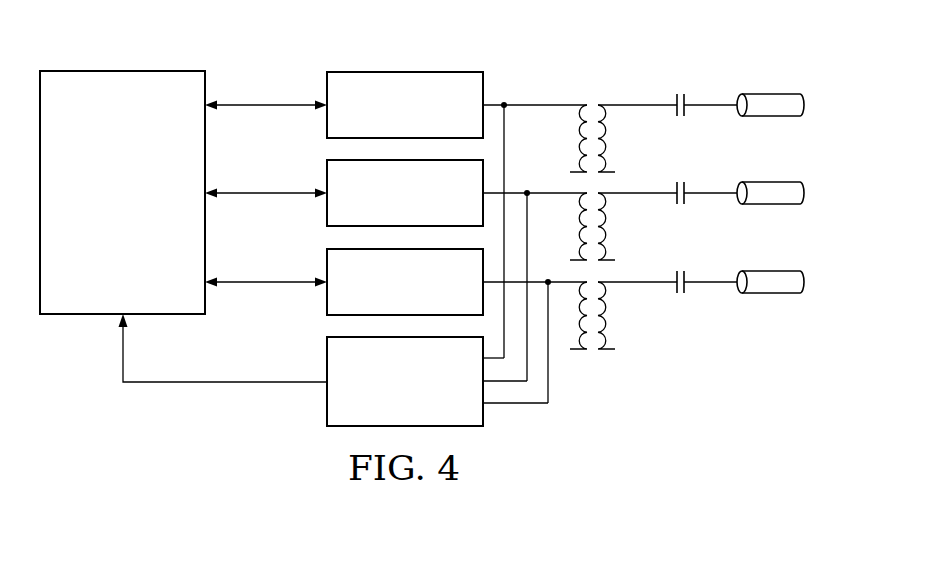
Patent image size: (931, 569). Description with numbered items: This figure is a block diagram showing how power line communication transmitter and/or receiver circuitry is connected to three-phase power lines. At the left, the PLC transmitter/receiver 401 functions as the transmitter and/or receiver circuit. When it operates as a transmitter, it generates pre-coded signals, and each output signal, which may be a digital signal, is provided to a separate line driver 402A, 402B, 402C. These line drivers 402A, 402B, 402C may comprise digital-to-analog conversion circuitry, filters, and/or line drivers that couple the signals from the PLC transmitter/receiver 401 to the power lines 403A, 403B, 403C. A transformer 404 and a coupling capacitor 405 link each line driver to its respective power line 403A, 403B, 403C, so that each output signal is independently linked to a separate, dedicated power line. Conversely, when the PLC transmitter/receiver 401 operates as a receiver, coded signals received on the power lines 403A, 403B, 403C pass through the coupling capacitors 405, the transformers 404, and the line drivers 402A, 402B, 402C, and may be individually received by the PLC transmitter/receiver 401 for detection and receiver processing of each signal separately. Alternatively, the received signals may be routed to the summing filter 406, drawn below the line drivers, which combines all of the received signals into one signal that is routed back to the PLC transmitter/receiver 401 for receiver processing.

The PLC transmitter/receiver 401 is at (102, 257).
The line driver circuit 402A is at (327, 88).
The line driver circuit 402B is at (327, 178).
The line driver circuit 402C is at (327, 296).
The power line 403A is at (770, 94).
The power line 403B is at (772, 182).
The power line 403C is at (772, 293).
The transformer 404 is at (596, 92).
The coupling capacitor 405 is at (679, 92).
The summing filter 406 is at (327, 391).